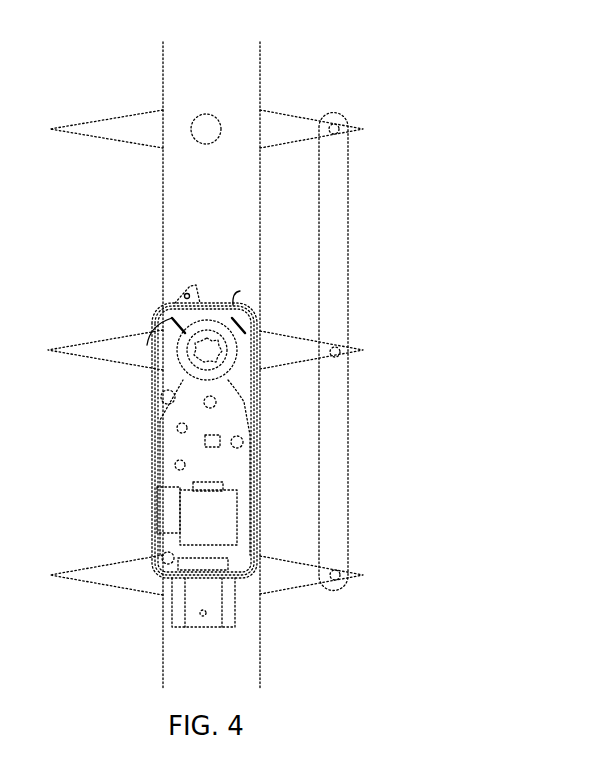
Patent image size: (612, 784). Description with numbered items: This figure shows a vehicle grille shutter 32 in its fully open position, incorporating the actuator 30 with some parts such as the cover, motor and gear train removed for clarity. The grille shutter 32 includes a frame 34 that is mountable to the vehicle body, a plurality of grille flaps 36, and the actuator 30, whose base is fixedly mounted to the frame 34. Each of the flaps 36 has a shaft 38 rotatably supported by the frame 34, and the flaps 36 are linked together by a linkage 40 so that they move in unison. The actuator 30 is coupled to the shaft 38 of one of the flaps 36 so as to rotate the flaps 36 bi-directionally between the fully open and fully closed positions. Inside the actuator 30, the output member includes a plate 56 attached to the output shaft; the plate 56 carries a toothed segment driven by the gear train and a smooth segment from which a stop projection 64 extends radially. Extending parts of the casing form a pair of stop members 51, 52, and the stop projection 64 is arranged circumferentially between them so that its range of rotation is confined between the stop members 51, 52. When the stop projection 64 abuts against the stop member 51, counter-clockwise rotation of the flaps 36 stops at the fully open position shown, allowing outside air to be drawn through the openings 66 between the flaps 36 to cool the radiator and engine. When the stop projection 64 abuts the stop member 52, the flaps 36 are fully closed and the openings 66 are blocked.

The actuator 30 is at (153, 455).
The grille shutter 32 is at (437, 147).
The frame 34 is at (242, 235).
The grille flaps 36 is at (118, 573).
The shaft 38 is at (205, 130).
The linkage 40 is at (320, 390).
The stop member 51 is at (150, 342).
The stop member 52 is at (230, 292).
The plate 56 is at (183, 368).
The stop projection 64 is at (163, 310).
The openings 66 is at (280, 490).